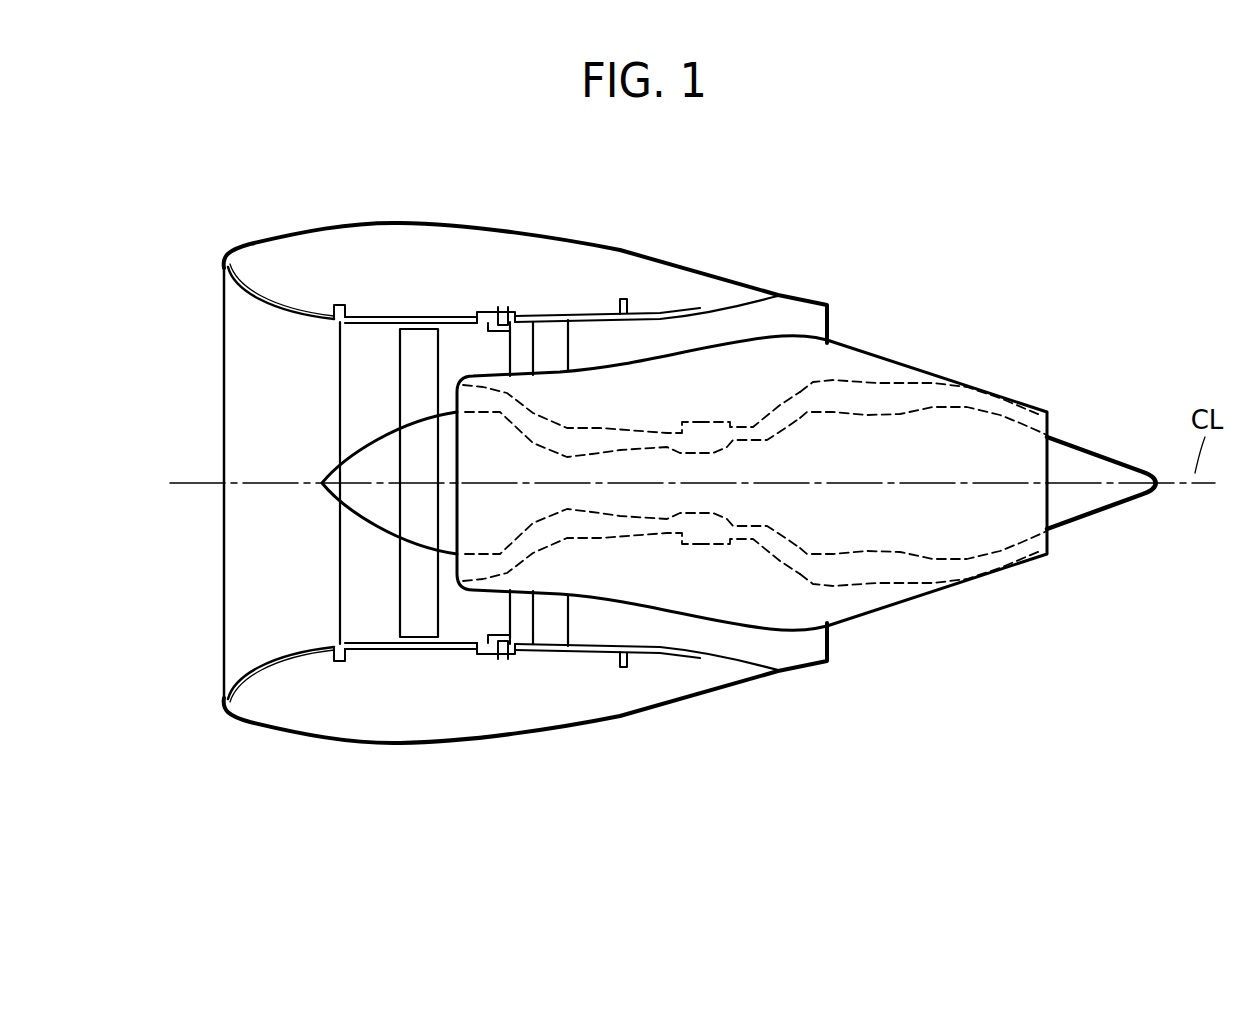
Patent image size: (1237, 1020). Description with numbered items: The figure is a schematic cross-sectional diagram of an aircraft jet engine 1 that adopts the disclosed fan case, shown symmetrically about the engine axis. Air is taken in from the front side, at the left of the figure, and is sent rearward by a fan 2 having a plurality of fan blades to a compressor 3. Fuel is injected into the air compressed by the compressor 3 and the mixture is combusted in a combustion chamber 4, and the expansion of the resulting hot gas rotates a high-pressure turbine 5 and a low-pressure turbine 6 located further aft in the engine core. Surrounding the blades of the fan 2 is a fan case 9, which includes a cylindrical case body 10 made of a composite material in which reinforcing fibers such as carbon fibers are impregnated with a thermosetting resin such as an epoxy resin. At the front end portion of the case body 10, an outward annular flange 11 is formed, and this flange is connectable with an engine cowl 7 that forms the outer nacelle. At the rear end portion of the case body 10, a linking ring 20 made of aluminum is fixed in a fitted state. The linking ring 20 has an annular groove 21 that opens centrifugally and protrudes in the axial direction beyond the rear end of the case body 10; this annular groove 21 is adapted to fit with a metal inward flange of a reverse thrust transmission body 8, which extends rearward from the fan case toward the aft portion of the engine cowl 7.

The aircraft jet engine 1 is at (893, 268).
The fan 2 is at (385, 555).
The compressor 3 is at (567, 525).
The combustion chamber 4 is at (718, 537).
The high-pressure turbine 5 is at (775, 537).
The low-pressure turbine 6 is at (890, 568).
The engine cowl 7 is at (268, 297).
The reverse thrust transmission body 8 is at (588, 304).
The fan case 9 is at (447, 311).
The case body 10 is at (399, 328).
The outward annular flange 11 is at (351, 304).
The linking ring 20 is at (487, 312).
The annular groove 21 is at (503, 307).